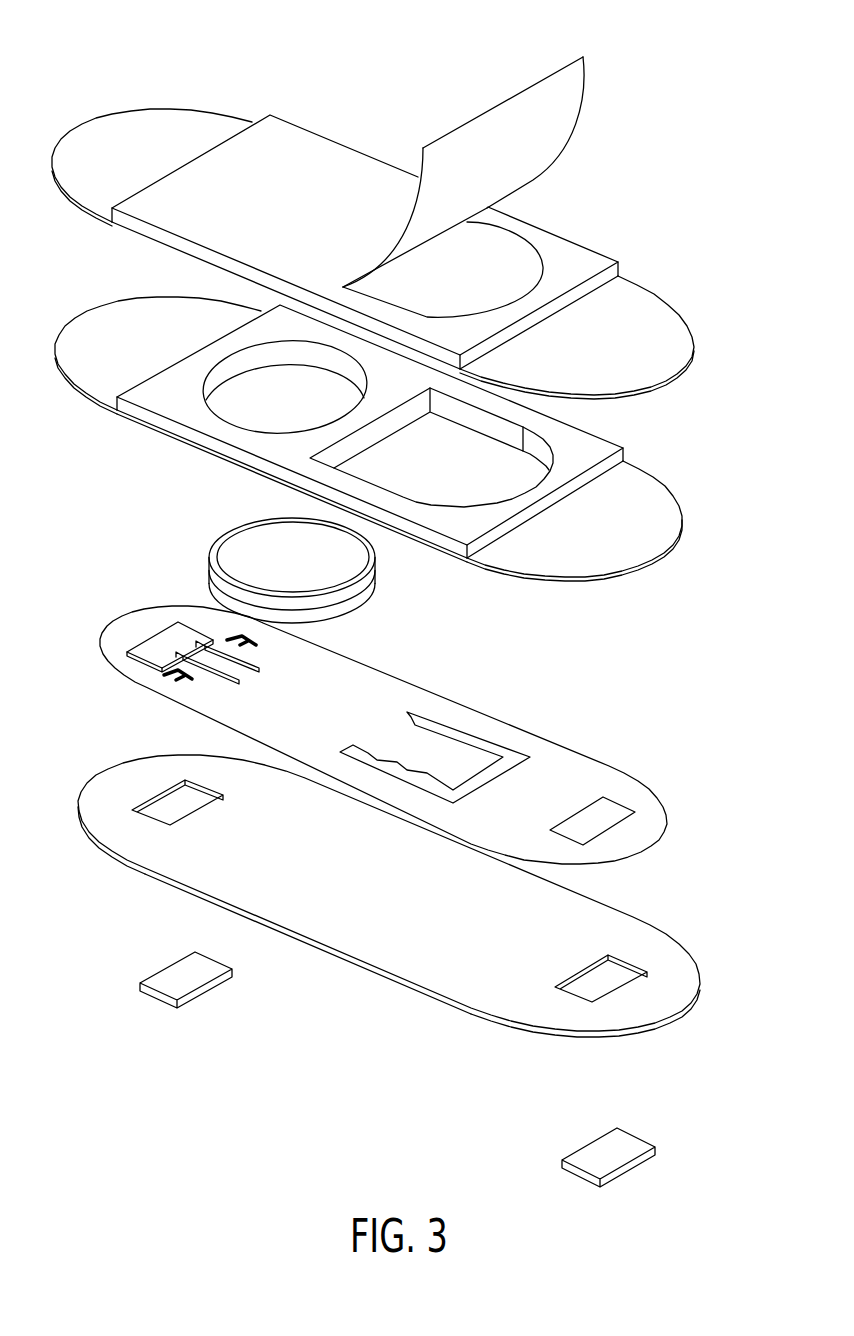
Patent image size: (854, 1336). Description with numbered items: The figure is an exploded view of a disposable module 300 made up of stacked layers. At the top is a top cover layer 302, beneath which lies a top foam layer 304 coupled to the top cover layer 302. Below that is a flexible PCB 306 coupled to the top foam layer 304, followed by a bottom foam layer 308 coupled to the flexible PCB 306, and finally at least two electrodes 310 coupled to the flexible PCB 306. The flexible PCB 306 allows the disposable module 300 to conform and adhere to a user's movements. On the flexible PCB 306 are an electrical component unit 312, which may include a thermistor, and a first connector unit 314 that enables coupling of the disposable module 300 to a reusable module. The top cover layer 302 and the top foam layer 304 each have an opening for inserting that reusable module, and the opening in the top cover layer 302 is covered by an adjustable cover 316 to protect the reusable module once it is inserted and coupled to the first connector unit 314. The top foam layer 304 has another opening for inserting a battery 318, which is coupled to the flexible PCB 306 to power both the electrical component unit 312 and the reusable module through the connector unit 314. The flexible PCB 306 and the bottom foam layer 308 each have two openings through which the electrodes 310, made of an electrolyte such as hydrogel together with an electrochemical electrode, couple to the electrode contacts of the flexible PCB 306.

The disposable module 300 is at (108, 85).
The top cover layer 302 is at (665, 314).
The top foam layer 304 is at (663, 517).
The flexible PCB 306 is at (387, 735).
The bottom foam layer 308 is at (678, 983).
The electrodes 310 is at (208, 970).
The electrical component unit 312 is at (125, 652).
The first connector unit 314 is at (457, 757).
The adjustable cover 316 is at (560, 115).
The battery 318 is at (240, 552).